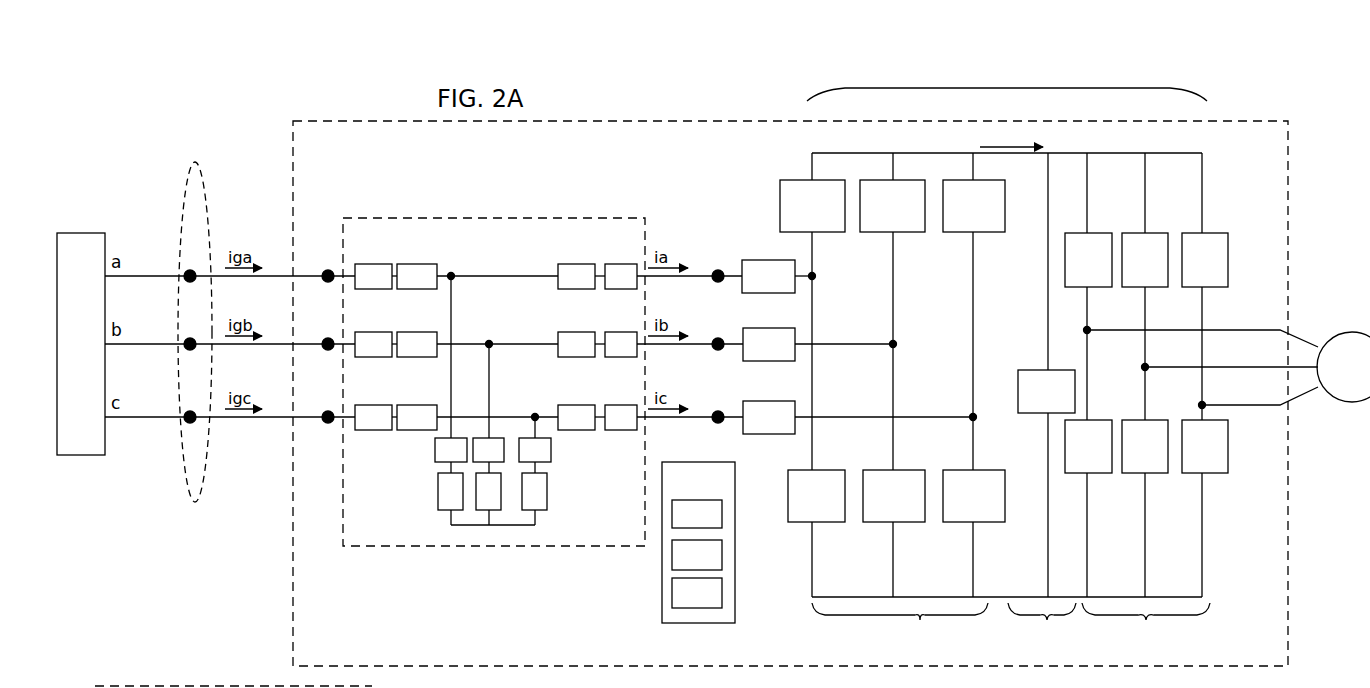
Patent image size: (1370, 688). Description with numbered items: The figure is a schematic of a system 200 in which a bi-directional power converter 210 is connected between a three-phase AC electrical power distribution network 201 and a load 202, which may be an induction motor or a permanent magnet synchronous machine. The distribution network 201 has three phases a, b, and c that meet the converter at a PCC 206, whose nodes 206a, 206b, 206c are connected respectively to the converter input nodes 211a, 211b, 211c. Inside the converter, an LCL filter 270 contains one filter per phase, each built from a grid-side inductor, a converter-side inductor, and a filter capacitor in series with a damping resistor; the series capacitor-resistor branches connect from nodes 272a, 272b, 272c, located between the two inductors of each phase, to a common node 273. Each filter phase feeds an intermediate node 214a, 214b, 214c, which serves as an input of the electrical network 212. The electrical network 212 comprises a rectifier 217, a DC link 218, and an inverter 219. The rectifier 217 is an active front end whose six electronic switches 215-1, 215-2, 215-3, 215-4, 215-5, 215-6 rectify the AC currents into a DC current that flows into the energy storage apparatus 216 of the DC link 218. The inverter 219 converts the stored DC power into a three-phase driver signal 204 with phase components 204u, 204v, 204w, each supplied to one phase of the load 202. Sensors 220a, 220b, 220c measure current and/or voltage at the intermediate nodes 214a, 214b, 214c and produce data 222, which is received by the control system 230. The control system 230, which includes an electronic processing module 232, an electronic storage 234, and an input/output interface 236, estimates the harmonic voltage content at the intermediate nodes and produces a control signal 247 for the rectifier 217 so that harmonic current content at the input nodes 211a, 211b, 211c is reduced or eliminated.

The system 200 is at (774, 36).
The three-phase AC electrical power distribution network 201 is at (81, 344).
The load 202 is at (1343, 367).
The three-phase AC driver signal 204 is at (1338, 300).
The phase component 204u is at (1266, 322).
The phase component 204v is at (1268, 365).
The phase component 204w is at (1268, 402).
The PCC 206 is at (173, 156).
The PCC node 206a is at (190, 274).
The PCC node 206b is at (190, 342).
The PCC node 206c is at (190, 415).
The bi-directional power converter 210 is at (790, 393).
The input node 211a is at (328, 274).
The input node 211b is at (328, 342).
The input node 211c is at (328, 415).
The electrical network 212 is at (1005, 88).
The intermediate node 214a is at (718, 272).
The intermediate node 214b is at (718, 341).
The intermediate node 214c is at (718, 414).
The electronic switch 215-1 is at (812, 206).
The electronic switch 215-2 is at (974, 496).
The electronic switch 215-3 is at (892, 206).
The electronic switch 215-4 is at (816, 496).
The electronic switch 215-5 is at (974, 206).
The electronic switch 215-6 is at (894, 496).
The energy storage apparatus 216 is at (1027, 375).
The rectifier 217 is at (900, 631).
The DC link 218 is at (1042, 631).
The inverter 219 is at (1146, 631).
The sensor 220a is at (768, 276).
The sensor 220b is at (769, 344).
The sensor 220c is at (769, 417).
The data 222 is at (701, 525).
The control system 230 is at (698, 542).
The electronic processing module 232 is at (697, 514).
The electronic storage 234 is at (697, 555).
The input/output interface 236 is at (697, 593).
The control signal 247 is at (800, 573).
The LCL filter 270 is at (494, 401).
The node 272a is at (453, 274).
The node 272b is at (491, 342).
The node 272c is at (537, 415).
The node 273 is at (510, 525).